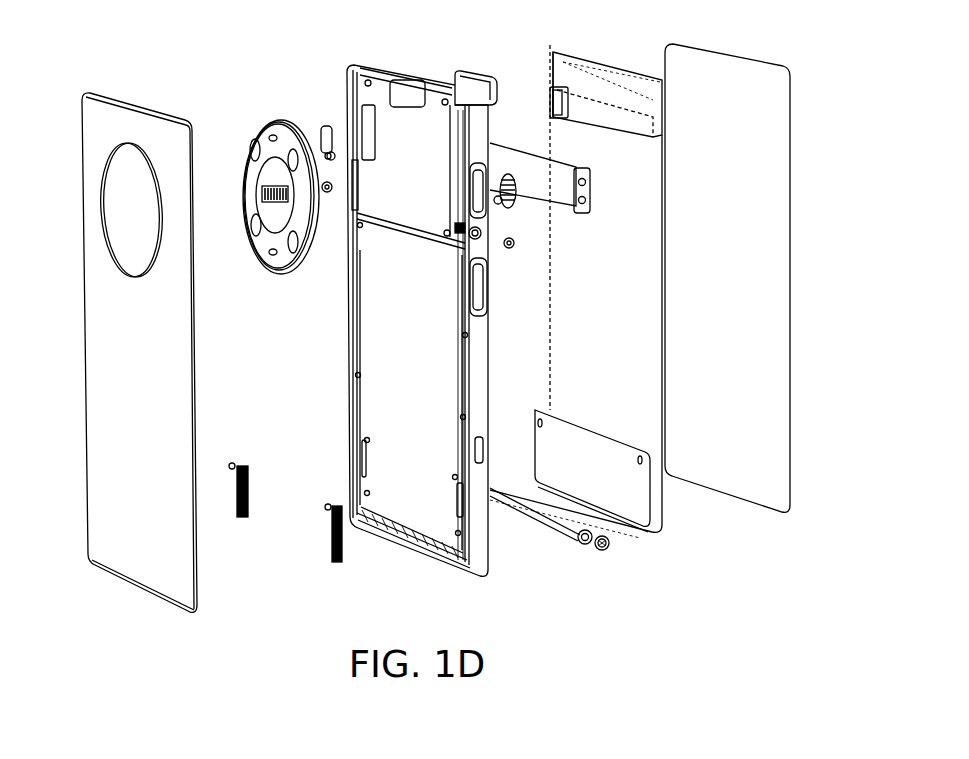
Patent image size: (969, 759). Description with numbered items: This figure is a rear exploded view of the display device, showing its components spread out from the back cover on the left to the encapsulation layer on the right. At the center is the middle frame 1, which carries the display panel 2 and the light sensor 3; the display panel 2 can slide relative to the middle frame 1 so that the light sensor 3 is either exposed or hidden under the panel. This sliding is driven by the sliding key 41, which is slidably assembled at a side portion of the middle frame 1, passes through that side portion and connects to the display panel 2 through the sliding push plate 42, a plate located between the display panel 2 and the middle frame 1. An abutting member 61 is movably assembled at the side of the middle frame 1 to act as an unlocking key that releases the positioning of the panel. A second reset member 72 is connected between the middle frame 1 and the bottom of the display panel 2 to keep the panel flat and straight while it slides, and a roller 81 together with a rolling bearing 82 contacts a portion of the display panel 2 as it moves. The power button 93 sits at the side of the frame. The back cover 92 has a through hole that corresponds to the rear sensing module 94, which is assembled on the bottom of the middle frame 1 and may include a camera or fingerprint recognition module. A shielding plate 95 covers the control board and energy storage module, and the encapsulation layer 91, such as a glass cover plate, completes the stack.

The middle frame 1 is at (362, 67).
The display panel 2 is at (593, 70).
The light sensor 3 is at (477, 77).
The sliding key 41 is at (327, 125).
The sliding push plate 42 is at (560, 187).
The abutting member 61 is at (328, 193).
The second reset member 72 is at (233, 507).
The roller 81 is at (523, 515).
The rolling bearing 82 is at (608, 550).
The encapsulation layer 91 is at (730, 84).
The back cover 92 is at (118, 407).
The power button 93 is at (480, 292).
The rear sensing module 94 is at (252, 150).
The shielding plate 95 is at (397, 470).